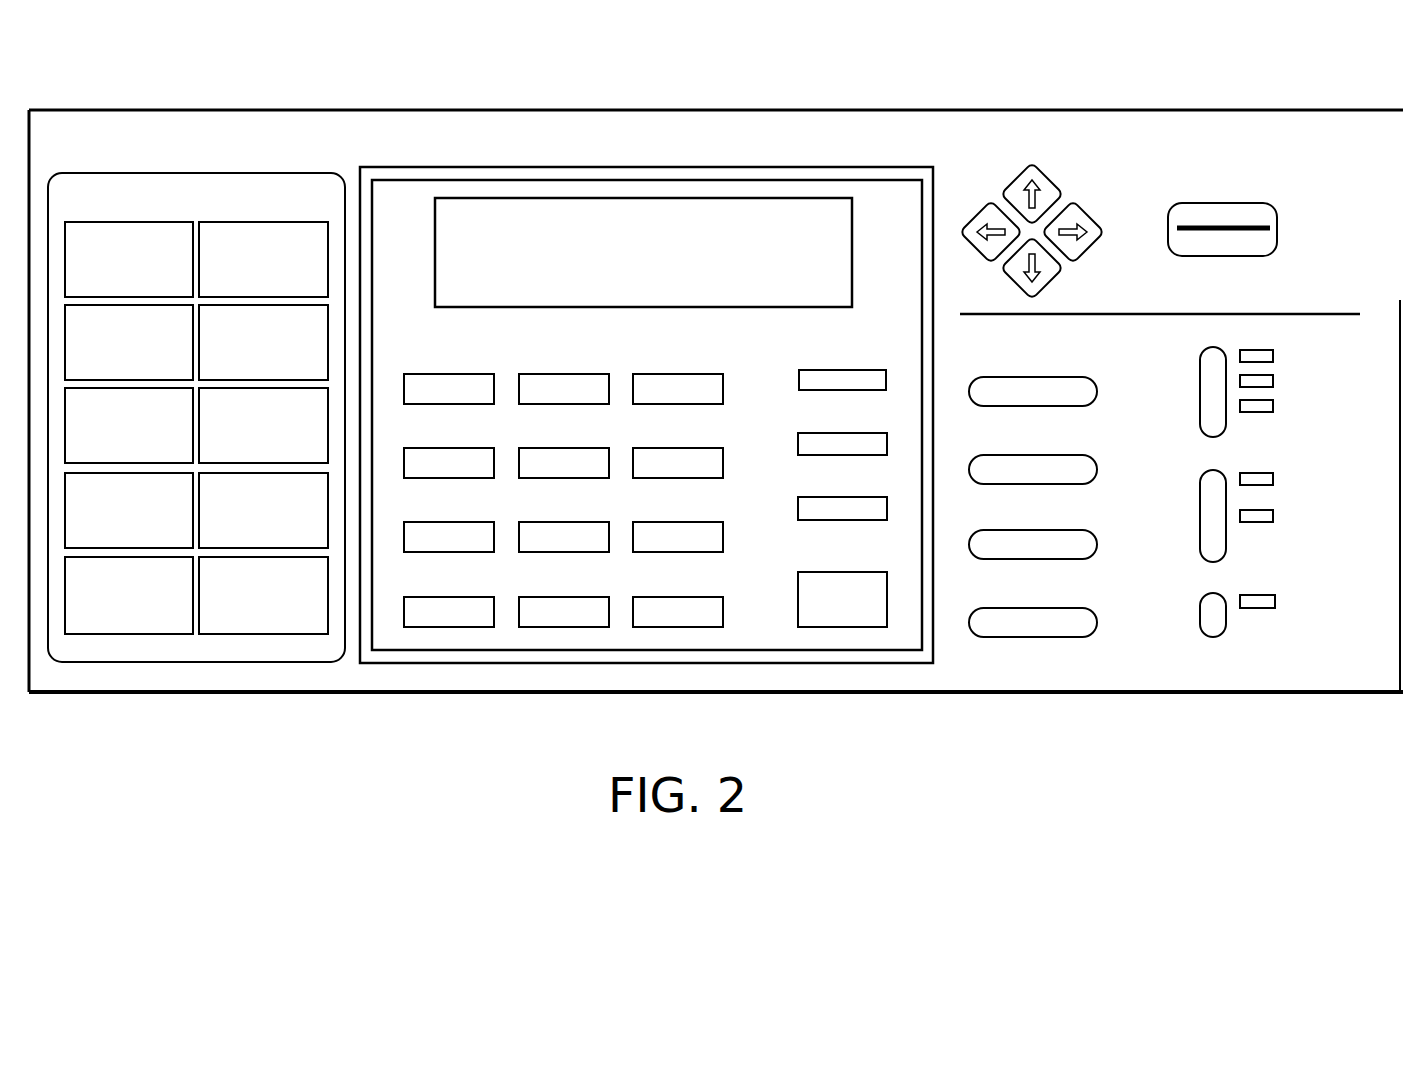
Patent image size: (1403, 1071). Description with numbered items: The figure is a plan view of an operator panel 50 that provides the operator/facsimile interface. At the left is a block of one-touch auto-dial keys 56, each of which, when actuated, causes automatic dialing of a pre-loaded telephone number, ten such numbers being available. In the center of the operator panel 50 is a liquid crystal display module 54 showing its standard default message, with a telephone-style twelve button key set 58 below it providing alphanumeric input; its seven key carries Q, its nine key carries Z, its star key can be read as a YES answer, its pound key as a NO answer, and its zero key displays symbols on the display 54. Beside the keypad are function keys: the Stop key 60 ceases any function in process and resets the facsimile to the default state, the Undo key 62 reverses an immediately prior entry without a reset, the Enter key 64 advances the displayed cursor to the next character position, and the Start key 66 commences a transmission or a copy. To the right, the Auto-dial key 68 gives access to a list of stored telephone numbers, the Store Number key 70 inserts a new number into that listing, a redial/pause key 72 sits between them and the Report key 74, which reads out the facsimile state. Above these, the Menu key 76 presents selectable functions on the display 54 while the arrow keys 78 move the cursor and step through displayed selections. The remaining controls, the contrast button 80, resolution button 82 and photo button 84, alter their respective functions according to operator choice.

The operator panel 50 is at (864, 91).
The liquid crystal display module 54 is at (831, 259).
The one-touch auto-dial keys 56 is at (242, 617).
The telephone-style twelve button key set 58 is at (508, 364).
The Stop key 60 is at (806, 385).
The Undo key 62 is at (806, 445).
The Enter key 64 is at (806, 508).
The Start key 66 is at (810, 595).
The Auto-dial key 68 is at (1090, 397).
The Store Number key 70 is at (1083, 463).
The redial/pause key 72 is at (1083, 545).
The Report key 74 is at (1073, 630).
The Menu key 76 is at (1210, 245).
The arrow keys 78 is at (1040, 143).
The contrast button 80 is at (1207, 365).
The resolution button 82 is at (1210, 482).
The photo button 84 is at (1208, 630).